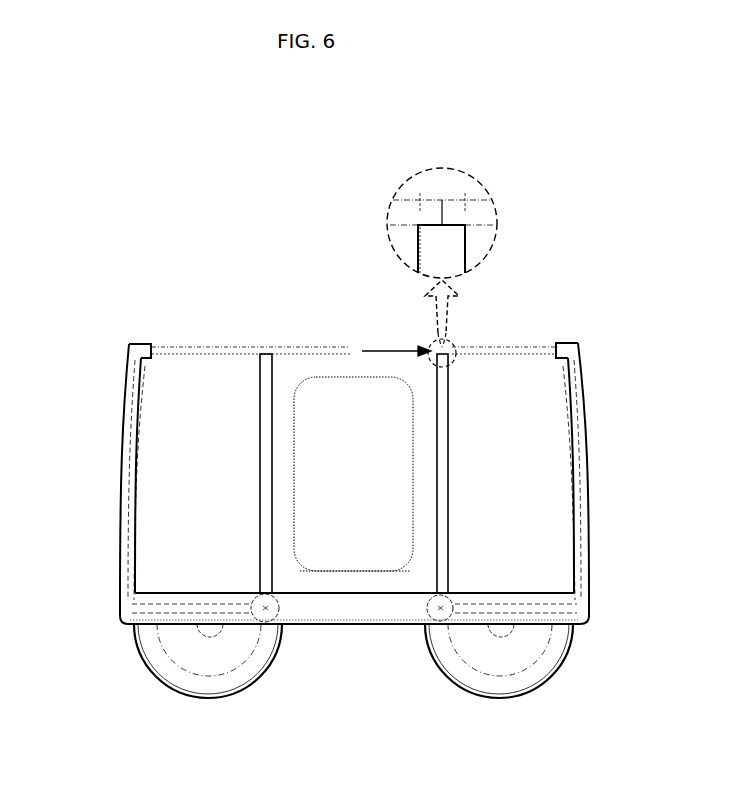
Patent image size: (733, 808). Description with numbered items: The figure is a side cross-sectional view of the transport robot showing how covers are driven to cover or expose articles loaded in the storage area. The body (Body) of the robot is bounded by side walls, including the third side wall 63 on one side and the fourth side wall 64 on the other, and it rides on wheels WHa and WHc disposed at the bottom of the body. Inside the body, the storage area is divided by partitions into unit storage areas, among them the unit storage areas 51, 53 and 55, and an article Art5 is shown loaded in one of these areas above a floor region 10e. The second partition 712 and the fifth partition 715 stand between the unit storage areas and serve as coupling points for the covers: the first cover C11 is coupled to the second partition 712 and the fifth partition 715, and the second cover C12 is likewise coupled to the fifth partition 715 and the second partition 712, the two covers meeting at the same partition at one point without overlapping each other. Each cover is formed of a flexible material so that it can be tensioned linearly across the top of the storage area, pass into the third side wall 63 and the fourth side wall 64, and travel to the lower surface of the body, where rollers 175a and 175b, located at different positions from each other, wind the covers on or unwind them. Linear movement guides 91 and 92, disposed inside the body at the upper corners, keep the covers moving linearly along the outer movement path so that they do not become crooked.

The body Body is at (106, 288).
The unit storage area 53 is at (268, 565).
The third side wall 63 is at (122, 478).
The fourth side wall 64 is at (585, 478).
The linear movement guide 91 is at (125, 347).
The linear movement guide 92 is at (581, 350).
The unit storage area 51 is at (148, 530).
The unit storage area 55 is at (556, 508).
The second partition 712 is at (258, 440).
The fifth partition 715 is at (445, 555).
The first cover C11 is at (194, 347).
The second cover C12 is at (504, 347).
The fifth article Art5 is at (353, 474).
The floor / loading surface 10e is at (360, 572).
The wheel WHa is at (206, 681).
The wheel WHc is at (498, 681).
The roller 175a is at (270, 614).
The roller 175b is at (436, 615).